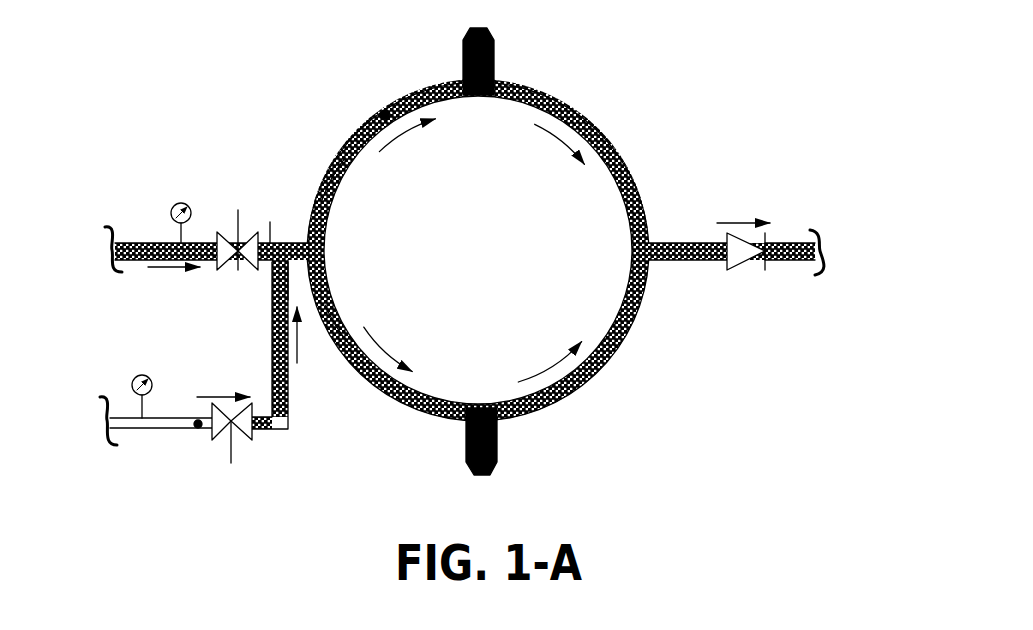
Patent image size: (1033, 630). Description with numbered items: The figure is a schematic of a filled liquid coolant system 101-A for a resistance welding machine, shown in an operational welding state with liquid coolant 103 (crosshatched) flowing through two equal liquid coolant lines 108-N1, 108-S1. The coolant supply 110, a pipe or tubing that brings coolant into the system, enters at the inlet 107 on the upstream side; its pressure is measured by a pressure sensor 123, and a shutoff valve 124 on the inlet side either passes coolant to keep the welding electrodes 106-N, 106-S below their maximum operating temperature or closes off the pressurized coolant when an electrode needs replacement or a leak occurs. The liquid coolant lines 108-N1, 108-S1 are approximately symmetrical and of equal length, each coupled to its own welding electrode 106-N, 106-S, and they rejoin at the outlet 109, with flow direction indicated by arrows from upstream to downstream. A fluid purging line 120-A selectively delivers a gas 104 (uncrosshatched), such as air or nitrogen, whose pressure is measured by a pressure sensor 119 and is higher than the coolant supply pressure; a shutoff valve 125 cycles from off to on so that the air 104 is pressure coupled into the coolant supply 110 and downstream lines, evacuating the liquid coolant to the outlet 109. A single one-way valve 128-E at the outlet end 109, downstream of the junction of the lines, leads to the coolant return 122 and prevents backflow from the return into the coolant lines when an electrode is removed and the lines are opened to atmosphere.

The filled liquid coolant system 101-A is at (627, 94).
The liquid coolant 103 is at (382, 111).
The welding electrode 106-N is at (474, 28).
The welding electrode 106-S is at (467, 463).
The liquid coolant line 108-N1 is at (327, 208).
The liquid coolant line 108-S1 is at (334, 308).
The coolant supply 110 is at (108, 252).
The inlet 107 is at (303, 244).
The pressure sensor 123 is at (173, 204).
The shutoff valve 124 is at (247, 265).
The outlet 109 is at (656, 242).
The one-way valve 128-E is at (729, 271).
The coolant return 122 is at (826, 232).
The fluid purging line 120-A is at (128, 417).
The pressure sensor 119 is at (141, 374).
The gas 104 is at (197, 428).
The shutoff valve 125 is at (250, 441).